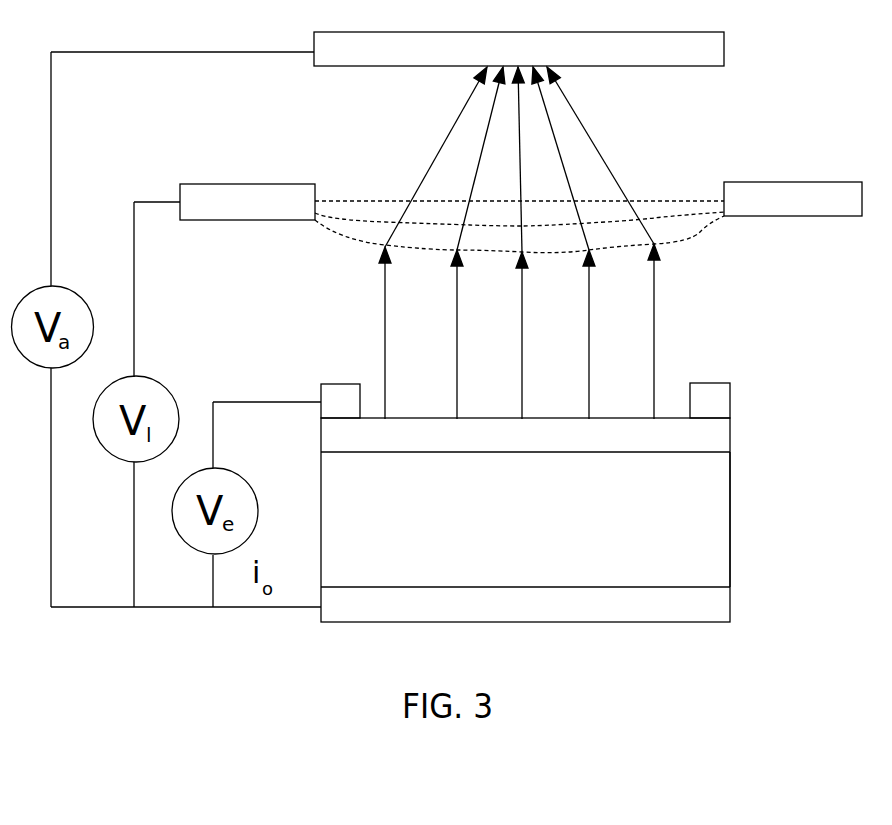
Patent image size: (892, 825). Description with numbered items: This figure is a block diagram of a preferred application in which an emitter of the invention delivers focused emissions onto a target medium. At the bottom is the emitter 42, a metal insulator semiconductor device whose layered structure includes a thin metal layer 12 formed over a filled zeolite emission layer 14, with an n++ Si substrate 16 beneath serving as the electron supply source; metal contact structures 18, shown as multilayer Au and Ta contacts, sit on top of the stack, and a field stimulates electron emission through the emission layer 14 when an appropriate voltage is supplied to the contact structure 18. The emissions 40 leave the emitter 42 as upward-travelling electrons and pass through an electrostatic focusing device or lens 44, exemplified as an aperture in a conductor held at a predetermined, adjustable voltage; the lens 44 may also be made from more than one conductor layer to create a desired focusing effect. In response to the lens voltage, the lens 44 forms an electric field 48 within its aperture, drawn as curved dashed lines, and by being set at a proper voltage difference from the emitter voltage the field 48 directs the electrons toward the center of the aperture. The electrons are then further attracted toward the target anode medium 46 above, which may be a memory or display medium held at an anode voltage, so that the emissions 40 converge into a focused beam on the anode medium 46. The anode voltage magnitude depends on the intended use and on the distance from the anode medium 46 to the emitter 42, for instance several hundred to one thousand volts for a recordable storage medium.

The thin metal layer 12 is at (708, 432).
The filled zeolite emission layer 14 is at (730, 520).
The n++ Si substrate 16 is at (731, 601).
The metal contact structure 18 is at (343, 402).
The emissions 40 is at (700, 318).
The emitter 42 is at (308, 347).
The electrostatic focusing device or lens 44 is at (228, 184).
The target anode medium 46 is at (724, 42).
The electric field 48 is at (688, 238).